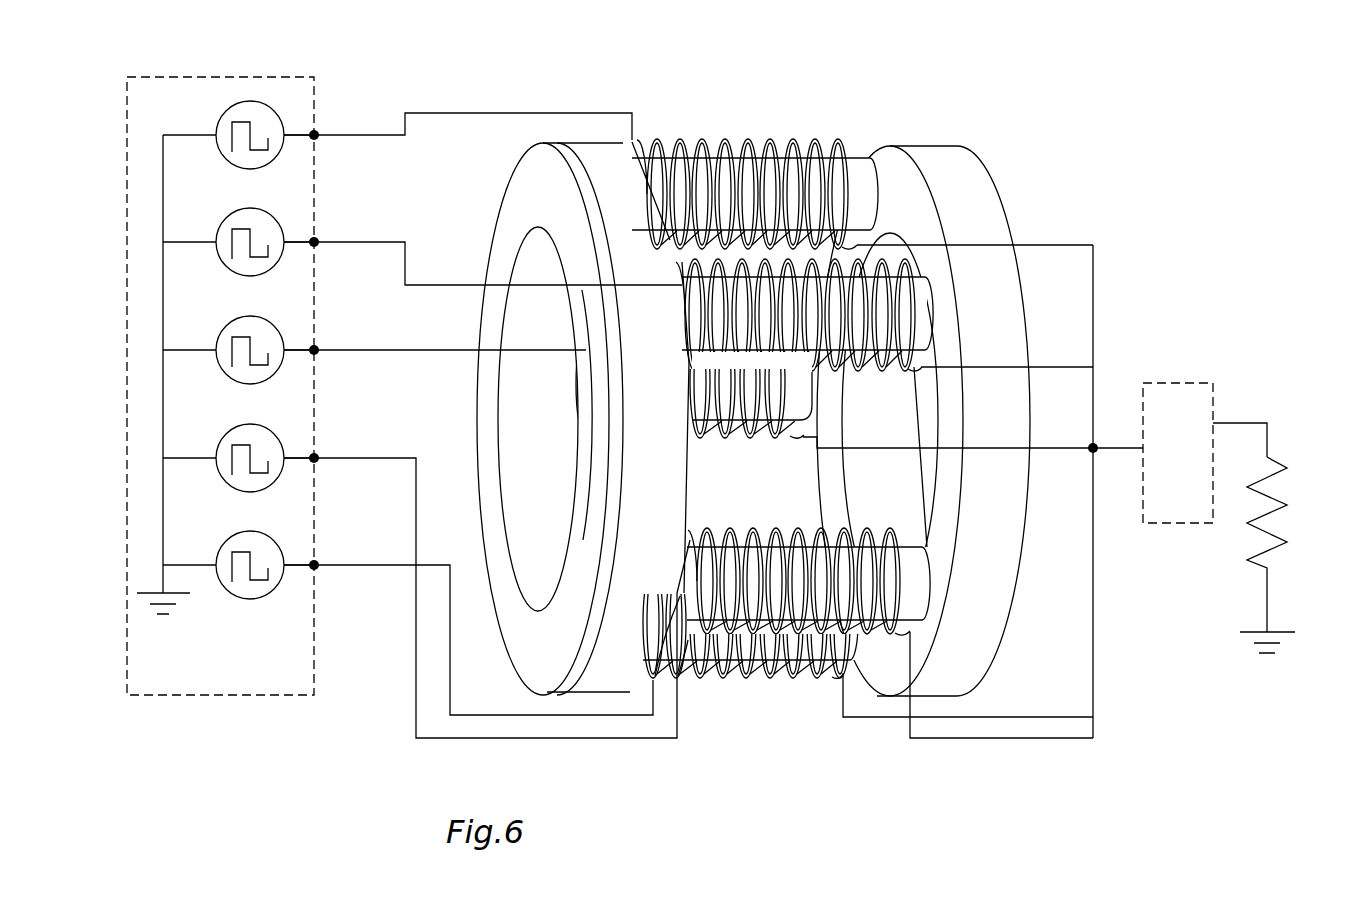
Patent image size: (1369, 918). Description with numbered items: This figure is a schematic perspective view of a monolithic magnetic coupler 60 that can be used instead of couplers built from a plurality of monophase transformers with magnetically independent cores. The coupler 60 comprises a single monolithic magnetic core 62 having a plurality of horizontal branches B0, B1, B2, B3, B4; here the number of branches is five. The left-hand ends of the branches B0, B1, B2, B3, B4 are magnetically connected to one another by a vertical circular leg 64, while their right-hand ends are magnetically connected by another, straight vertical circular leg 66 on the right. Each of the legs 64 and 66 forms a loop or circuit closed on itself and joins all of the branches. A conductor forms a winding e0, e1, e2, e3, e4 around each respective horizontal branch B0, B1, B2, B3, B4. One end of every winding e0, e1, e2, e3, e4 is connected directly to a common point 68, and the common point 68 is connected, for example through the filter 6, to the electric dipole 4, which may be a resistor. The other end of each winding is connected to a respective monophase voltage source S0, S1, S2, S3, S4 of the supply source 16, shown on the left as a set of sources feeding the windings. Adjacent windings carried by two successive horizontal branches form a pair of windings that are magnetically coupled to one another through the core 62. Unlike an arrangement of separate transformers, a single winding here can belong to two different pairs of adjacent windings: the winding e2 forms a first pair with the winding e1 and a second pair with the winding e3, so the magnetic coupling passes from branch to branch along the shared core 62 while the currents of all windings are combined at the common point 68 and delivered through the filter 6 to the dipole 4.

The supply source 16 is at (120, 140).
The monophase voltage source S0 is at (216, 127).
The monophase voltage source S1 is at (216, 234).
The monophase voltage source S2 is at (216, 342).
The monophase voltage source S3 is at (216, 450).
The monophase voltage source S4 is at (216, 557).
The monolithic magnetic coupler 60 is at (510, 55).
The monolithic magnetic core 62 is at (1014, 195).
The vertical circular leg 64 is at (613, 643).
The straight vertical circular leg 66 is at (958, 673).
The common point 68 is at (1098, 458).
The filter 6 is at (1205, 453).
The electric dipole 4 is at (1283, 507).
The horizontal branch B0 is at (925, 578).
The horizontal branch B1 is at (933, 293).
The horizontal branch B2 is at (773, 173).
The horizontal branch B3 is at (766, 392).
The horizontal branch B4 is at (803, 683).
The winding e0 is at (908, 605).
The winding e1 is at (923, 318).
The winding e2 is at (700, 140).
The winding e3 is at (703, 438).
The winding e4 is at (743, 683).